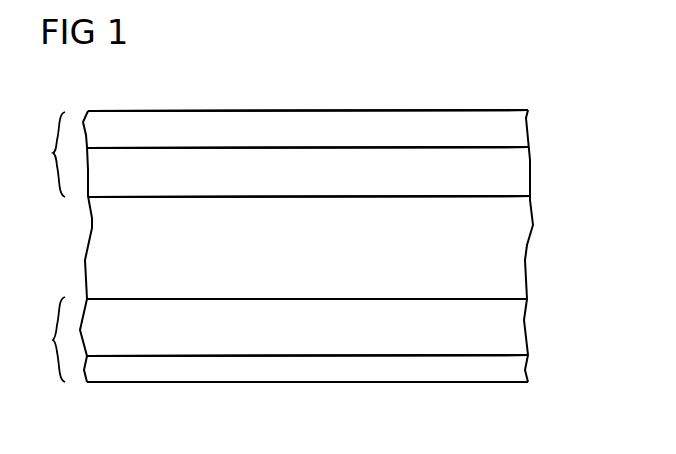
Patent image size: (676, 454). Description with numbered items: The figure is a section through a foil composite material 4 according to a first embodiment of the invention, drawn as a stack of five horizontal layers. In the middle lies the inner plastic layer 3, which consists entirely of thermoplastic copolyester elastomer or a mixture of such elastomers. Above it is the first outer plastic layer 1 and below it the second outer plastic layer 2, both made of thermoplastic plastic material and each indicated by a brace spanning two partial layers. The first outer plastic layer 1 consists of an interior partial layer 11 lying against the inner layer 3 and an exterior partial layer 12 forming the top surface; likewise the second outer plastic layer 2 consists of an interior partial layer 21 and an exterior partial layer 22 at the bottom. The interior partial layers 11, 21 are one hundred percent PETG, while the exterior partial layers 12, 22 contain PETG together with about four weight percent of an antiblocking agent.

The first outer plastic layer 1 is at (49, 154).
The second outer plastic layer 2 is at (49, 339).
The inner plastic layer 3 is at (518, 242).
The foil composite material 4 is at (503, 78).
The interior partial layer 11 is at (518, 173).
The exterior partial layer 12 is at (518, 118).
The interior partial layer 21 is at (518, 308).
The exterior partial layer 22 is at (518, 365).